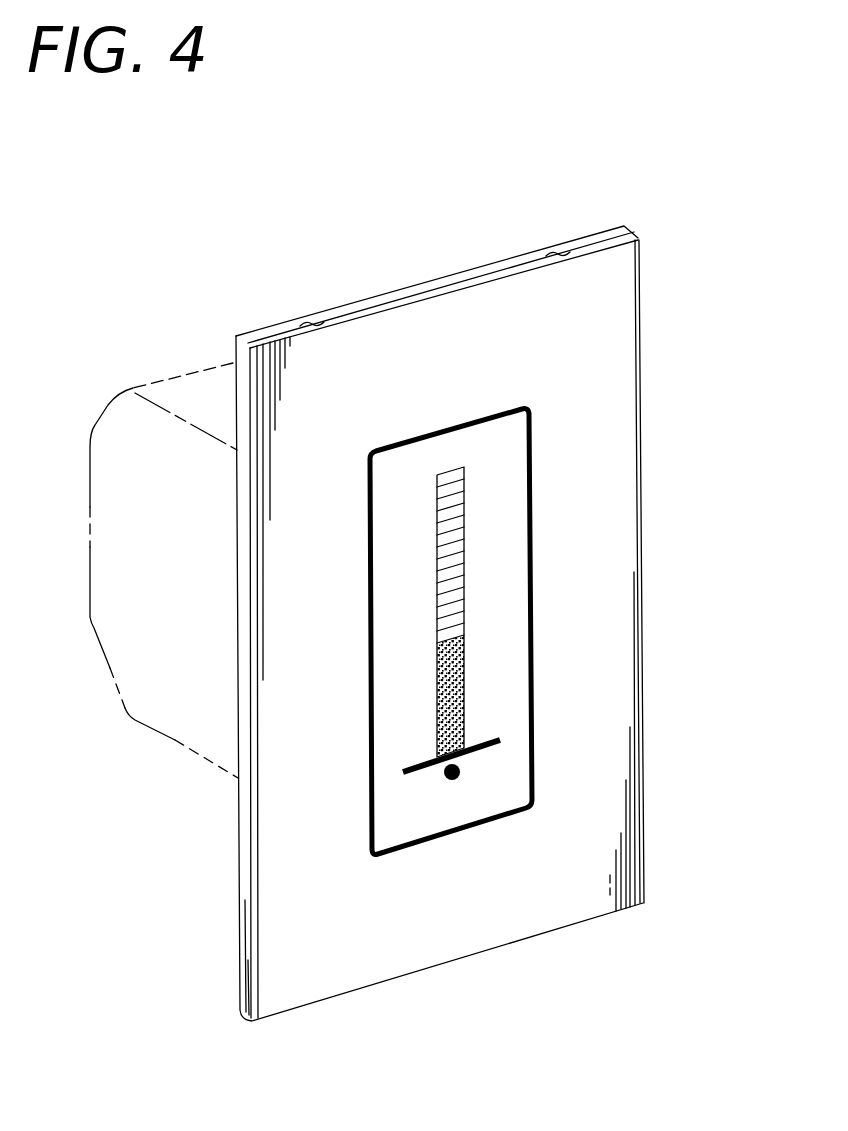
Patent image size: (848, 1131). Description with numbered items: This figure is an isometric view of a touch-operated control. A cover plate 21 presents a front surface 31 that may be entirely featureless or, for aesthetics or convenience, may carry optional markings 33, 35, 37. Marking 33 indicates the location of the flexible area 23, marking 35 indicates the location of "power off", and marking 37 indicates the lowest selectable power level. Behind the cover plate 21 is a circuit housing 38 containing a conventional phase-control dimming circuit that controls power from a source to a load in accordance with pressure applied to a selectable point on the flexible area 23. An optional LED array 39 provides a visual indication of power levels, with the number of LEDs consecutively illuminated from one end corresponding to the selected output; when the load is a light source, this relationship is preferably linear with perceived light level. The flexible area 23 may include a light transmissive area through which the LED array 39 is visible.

The cover plate 21 is at (443, 283).
The flexible area 23 is at (543, 655).
The front surface 31 is at (323, 958).
The marking 33 is at (534, 777).
The marking 35 is at (457, 778).
The marking 37 is at (498, 740).
The circuit housing 38 is at (182, 386).
The LED array 39 is at (460, 547).